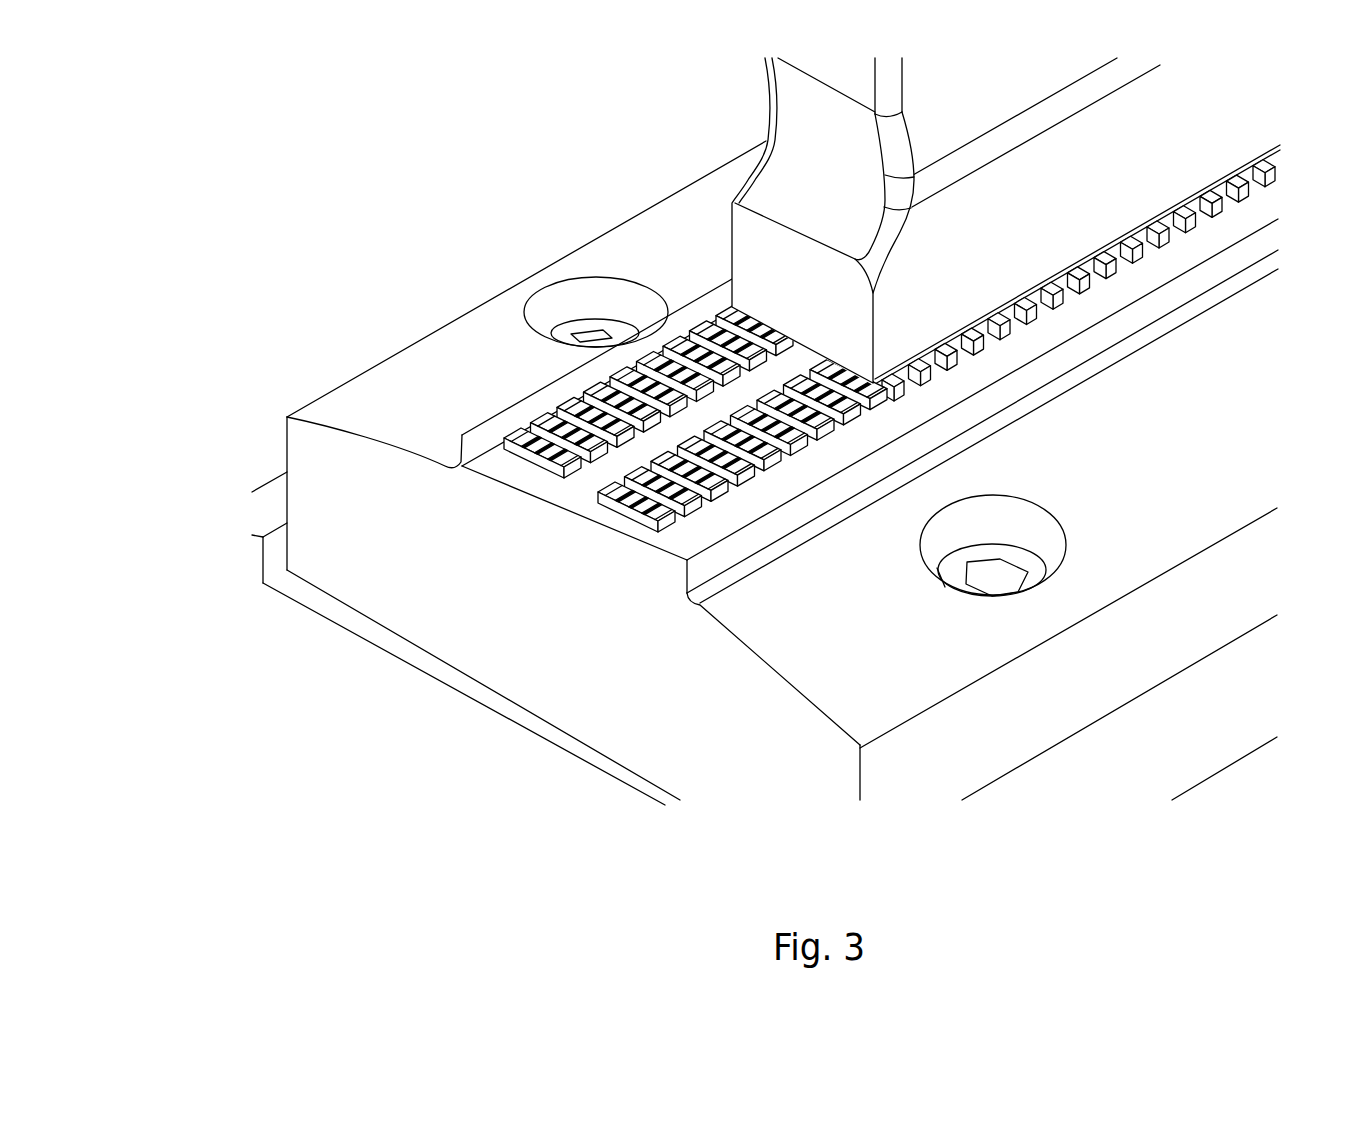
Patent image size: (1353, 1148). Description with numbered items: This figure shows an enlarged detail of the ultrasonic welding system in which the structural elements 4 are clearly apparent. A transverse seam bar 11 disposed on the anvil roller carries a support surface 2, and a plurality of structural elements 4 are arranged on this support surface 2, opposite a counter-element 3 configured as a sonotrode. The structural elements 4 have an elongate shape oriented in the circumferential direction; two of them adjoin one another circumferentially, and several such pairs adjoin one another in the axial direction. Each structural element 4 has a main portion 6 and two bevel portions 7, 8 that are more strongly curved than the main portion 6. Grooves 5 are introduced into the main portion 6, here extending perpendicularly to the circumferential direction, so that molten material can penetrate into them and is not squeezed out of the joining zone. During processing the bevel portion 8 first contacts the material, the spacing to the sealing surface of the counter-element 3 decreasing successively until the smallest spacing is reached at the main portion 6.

The support surface 2 is at (505, 405).
The counter-element 3 is at (835, 132).
The structural elements 4 is at (585, 413).
The grooves 5 is at (522, 443).
The main portion 6 is at (547, 455).
The bevel portion 7 is at (537, 453).
The bevel portion 8 is at (630, 527).
The transverse seam bar 11 is at (340, 455).